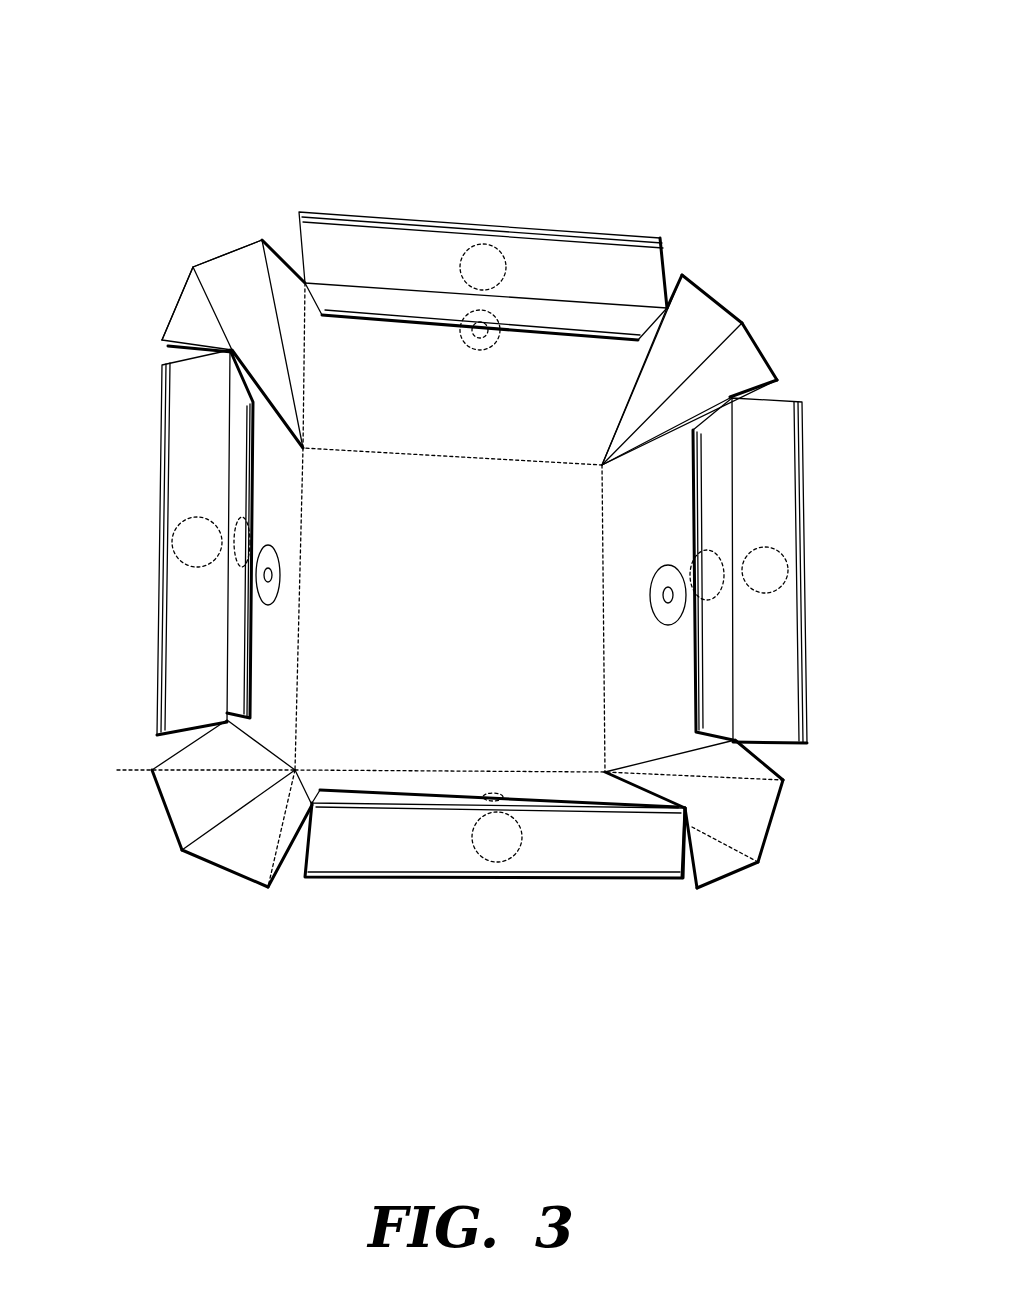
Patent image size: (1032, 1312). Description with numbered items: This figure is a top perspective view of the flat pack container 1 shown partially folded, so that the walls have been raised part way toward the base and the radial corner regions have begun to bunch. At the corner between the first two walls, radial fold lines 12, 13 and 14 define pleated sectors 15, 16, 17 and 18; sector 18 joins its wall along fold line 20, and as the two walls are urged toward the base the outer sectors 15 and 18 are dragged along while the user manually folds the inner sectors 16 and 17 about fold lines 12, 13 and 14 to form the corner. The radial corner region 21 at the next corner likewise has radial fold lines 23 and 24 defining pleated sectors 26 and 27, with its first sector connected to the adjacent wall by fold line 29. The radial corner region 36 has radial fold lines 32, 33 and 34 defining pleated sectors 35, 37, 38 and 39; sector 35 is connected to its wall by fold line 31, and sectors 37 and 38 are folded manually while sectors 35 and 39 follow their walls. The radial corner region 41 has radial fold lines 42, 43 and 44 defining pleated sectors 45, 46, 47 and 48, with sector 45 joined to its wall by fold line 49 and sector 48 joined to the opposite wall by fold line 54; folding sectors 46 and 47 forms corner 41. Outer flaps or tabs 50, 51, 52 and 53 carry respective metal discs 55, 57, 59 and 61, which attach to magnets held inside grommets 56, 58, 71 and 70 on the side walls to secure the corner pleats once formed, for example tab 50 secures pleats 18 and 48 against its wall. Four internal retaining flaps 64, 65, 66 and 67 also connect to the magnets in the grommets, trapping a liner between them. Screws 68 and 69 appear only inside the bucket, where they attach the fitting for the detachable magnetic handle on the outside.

The flat pack container 1 is at (148, 53).
The radial corner region 21 is at (788, 157).
The radial corner region 41 is at (178, 997).
The radial corner region 36 is at (822, 997).
The radial fold line 12 is at (160, 337).
The radial fold line 13 is at (193, 267).
The radial fold line 14 is at (260, 235).
The pleated sector 15 is at (178, 347).
The pleated sector 16 is at (187, 295).
The pleated sector 17 is at (222, 267).
The pleated sector 18 is at (278, 270).
The fold line 20 is at (308, 365).
The radial fold line 23 is at (748, 342).
The radial fold line 24 is at (682, 275).
The pleated sector 26 is at (697, 295).
The pleated sector 27 is at (770, 323).
The fold line 29 is at (627, 400).
The fold line 31 is at (668, 753).
The radial fold line 32 is at (783, 780).
The radial fold line 33 is at (758, 860).
The radial fold line 34 is at (697, 888).
The pleated sector 35 is at (750, 763).
The pleated sector 37 is at (760, 818).
The pleated sector 38 is at (742, 867).
The pleated sector 39 is at (687, 873).
The radial fold line 42 is at (117, 770).
The radial fold line 43 is at (183, 850).
The radial fold line 44 is at (268, 888).
The pleated sector 45 is at (283, 867).
The pleated sector 46 is at (240, 865).
The pleated sector 47 is at (172, 808).
The pleated sector 48 is at (183, 755).
The fold line 49 is at (310, 798).
The outer flap/tab 50 is at (177, 420).
The outer flap/tab 51 is at (345, 235).
The outer flap/tab 52 is at (787, 455).
The outer flap/tab 53 is at (573, 857).
The fold line 54 is at (253, 757).
The metal disc 55 is at (178, 533).
The grommet 56 is at (245, 537).
The metal disc 57 is at (483, 243).
The grommet 58 is at (478, 350).
The metal disc 59 is at (785, 562).
The metal disc 61 is at (507, 870).
The internal retaining flap 64 is at (588, 320).
The internal retaining flap 65 is at (712, 650).
The internal retaining flap 66 is at (385, 780).
The internal retaining flap 67 is at (240, 488).
The screw 68 is at (657, 590).
The screw 69 is at (268, 572).
The grommet 70 is at (488, 790).
The grommet 71 is at (698, 550).